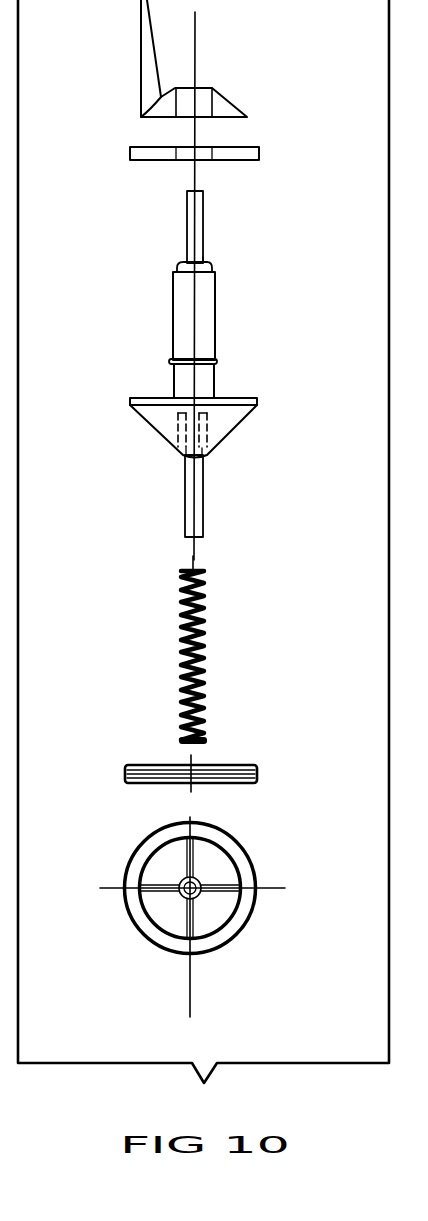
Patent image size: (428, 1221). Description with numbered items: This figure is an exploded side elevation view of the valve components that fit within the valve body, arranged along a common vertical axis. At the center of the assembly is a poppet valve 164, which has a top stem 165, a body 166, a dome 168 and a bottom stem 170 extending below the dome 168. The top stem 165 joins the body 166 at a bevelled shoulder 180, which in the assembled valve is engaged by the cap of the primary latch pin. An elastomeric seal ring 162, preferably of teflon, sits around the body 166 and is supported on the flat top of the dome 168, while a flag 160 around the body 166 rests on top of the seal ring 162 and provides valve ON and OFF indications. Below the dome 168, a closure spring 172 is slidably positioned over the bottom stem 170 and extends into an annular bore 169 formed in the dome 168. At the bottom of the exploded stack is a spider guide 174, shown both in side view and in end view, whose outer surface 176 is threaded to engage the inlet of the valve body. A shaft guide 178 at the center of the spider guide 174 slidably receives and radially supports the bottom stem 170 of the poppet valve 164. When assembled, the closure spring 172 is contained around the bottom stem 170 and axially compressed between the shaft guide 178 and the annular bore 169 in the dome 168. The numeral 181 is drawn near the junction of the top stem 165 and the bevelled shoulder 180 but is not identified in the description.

The flag 160 is at (232, 100).
The seal ring 162 is at (260, 153).
The poppet valve 164 is at (222, 282).
The top stem 165 is at (188, 215).
The body 166 is at (216, 325).
The dome 168 is at (233, 428).
The bore 169 is at (207, 453).
The bottom stem 170 is at (183, 507).
The closure spring 172 is at (200, 655).
The spider guide 174 is at (257, 770).
The outer surface 176 is at (125, 773).
The shaft guide 178 is at (182, 894).
The bevelled shoulder 180 is at (178, 265).
The neck 181 is at (204, 262).